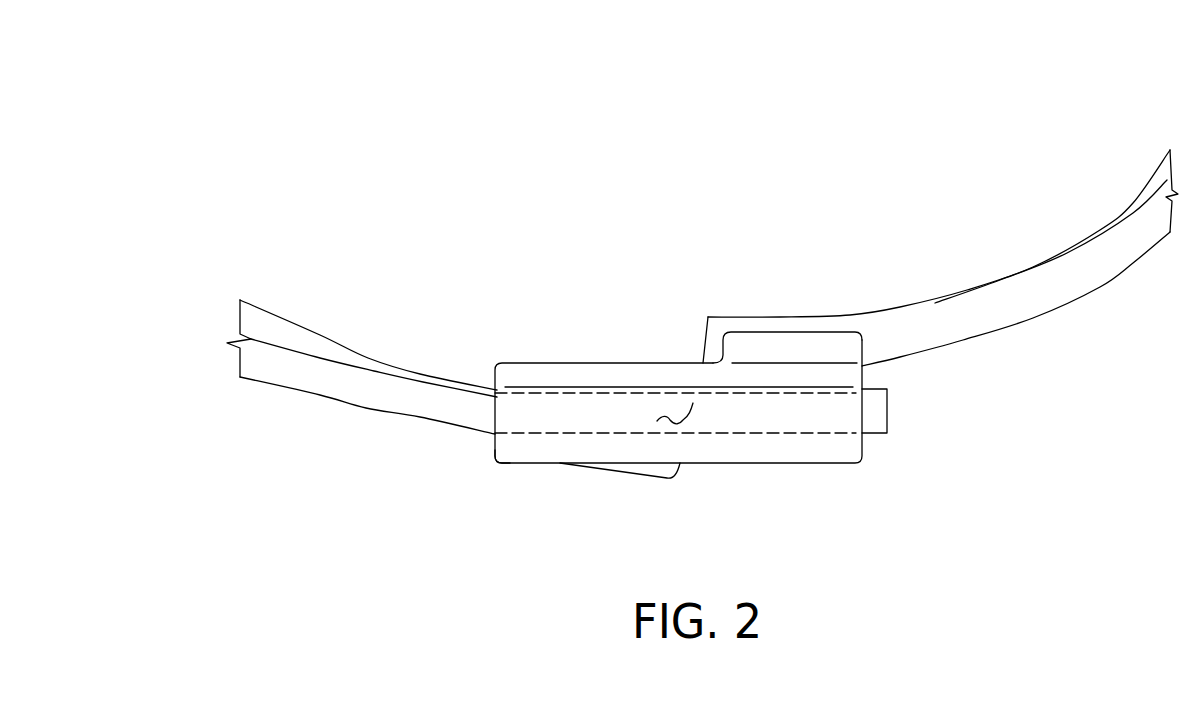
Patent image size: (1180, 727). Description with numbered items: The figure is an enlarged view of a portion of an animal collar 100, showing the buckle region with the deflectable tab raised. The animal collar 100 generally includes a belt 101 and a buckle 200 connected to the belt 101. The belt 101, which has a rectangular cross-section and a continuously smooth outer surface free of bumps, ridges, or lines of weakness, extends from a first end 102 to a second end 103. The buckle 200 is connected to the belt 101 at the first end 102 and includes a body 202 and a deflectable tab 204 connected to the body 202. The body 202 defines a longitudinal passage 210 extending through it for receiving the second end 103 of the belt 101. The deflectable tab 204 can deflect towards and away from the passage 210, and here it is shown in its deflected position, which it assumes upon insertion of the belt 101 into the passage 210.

The animal collar 100 is at (1094, 103).
The belt 101 is at (993, 330).
The first end 102 is at (700, 323).
The second end 103 is at (875, 413).
The buckle 200 is at (801, 480).
The body 202 is at (508, 453).
The deflectable tab 204 is at (663, 468).
The longitudinal passage 210 is at (675, 413).